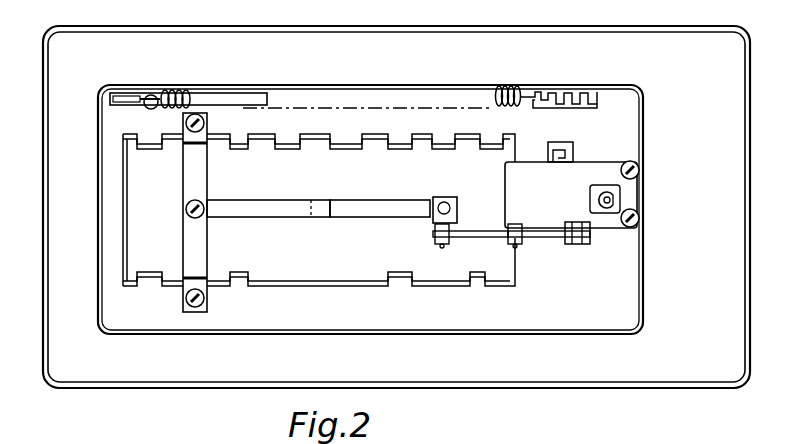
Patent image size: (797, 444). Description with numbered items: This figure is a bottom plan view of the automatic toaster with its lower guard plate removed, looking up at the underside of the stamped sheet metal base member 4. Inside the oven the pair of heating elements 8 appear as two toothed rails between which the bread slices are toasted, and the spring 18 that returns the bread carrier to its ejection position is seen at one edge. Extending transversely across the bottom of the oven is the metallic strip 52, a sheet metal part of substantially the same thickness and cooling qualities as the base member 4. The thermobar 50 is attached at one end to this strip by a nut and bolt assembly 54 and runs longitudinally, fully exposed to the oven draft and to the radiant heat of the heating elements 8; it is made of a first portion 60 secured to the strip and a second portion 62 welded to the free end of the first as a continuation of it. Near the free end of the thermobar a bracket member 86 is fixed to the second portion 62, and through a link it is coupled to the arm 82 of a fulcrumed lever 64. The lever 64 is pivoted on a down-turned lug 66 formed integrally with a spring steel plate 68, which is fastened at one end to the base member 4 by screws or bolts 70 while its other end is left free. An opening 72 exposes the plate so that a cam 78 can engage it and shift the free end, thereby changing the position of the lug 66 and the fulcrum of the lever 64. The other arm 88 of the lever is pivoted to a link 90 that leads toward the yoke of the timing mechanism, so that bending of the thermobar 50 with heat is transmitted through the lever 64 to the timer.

The base member 4 is at (705, 38).
The heating elements 8 is at (364, 142).
The spring 18 is at (173, 92).
The thermobar 50 is at (318, 189).
The metallic strip 52 is at (172, 212).
The nut and bolt assembly 54 is at (185, 215).
The first portion 60 is at (244, 204).
The second portion 62 is at (398, 199).
The fulcrumed lever 64 is at (525, 252).
The down-turned lug 66 is at (513, 226).
The spring steel plate 68 is at (599, 176).
The screws or bolts 70 is at (640, 172).
The opening 72 is at (560, 143).
The cam 78 is at (556, 155).
The arm 82 is at (468, 240).
The bracket member 86 is at (455, 235).
The arm 88 is at (553, 241).
The link 90 is at (587, 234).